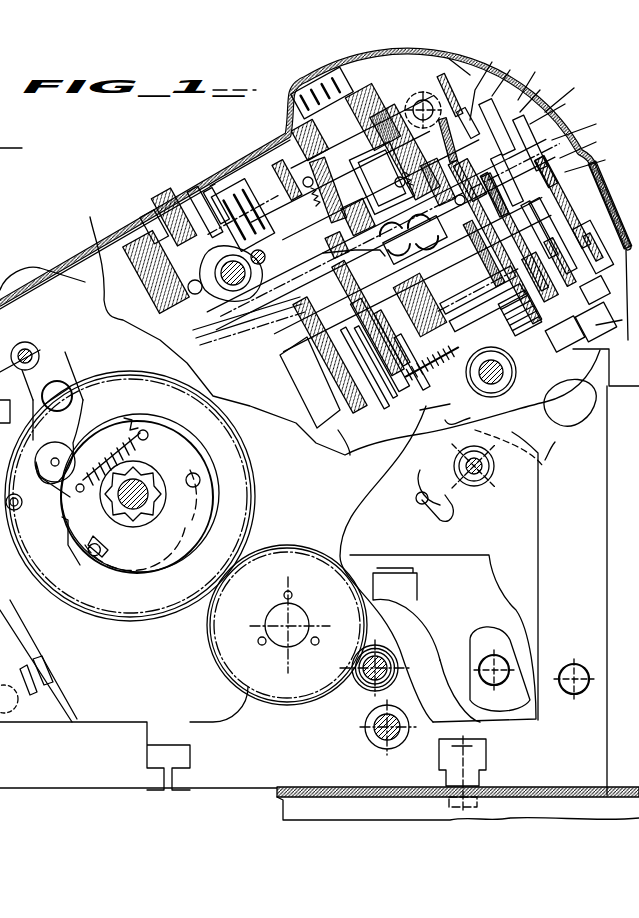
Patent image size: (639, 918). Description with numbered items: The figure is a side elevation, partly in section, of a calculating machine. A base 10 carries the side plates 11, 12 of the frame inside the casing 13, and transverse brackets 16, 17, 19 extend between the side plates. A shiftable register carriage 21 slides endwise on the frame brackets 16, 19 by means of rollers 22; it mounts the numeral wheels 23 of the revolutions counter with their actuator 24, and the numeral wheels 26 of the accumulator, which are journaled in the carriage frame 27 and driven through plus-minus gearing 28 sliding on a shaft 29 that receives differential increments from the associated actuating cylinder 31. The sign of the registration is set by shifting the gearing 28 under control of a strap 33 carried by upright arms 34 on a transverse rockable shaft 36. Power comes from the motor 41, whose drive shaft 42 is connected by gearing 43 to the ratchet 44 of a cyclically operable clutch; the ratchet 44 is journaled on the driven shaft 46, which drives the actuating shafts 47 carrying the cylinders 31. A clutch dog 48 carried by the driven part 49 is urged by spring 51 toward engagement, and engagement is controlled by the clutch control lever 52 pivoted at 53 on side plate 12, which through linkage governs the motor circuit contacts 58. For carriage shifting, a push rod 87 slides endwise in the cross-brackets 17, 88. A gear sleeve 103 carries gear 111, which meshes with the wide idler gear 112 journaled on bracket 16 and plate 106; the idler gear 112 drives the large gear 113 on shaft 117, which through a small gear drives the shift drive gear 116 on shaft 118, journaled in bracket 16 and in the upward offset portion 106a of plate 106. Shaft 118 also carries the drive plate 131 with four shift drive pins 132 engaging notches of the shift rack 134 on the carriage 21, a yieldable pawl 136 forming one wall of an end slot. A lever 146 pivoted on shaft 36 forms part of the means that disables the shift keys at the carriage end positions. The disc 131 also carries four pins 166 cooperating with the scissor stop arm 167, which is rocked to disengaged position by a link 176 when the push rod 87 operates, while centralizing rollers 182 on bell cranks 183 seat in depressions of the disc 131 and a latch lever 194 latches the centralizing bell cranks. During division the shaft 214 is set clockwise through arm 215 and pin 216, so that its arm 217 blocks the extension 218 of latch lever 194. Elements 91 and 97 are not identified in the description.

The base 10 is at (316, 788).
The side plate 11 is at (110, 258).
The side plate 12 is at (546, 536).
The casing 13 is at (605, 196).
The transverse bracket 16 is at (552, 340).
The transverse bracket 17 is at (376, 412).
The transverse bracket 19 is at (152, 290).
The shiftable register carriage 21 is at (262, 142).
The rollers 22 is at (150, 222).
The numeral wheels 23 is at (214, 190).
The actuator 24 is at (236, 292).
The numeral wheels 26 is at (335, 66).
The carriage frame 27 is at (380, 92).
The plus-minus gearing 28 is at (344, 250).
The shaft 29 is at (270, 298).
The actuating cylinder 31 is at (290, 345).
The strap 33 is at (413, 243).
The upright arms 34 is at (456, 368).
The transverse rockable shaft 36 is at (504, 378).
The motor 41 is at (458, 560).
The drive shaft 42 is at (366, 690).
The gearing 43 is at (258, 528).
The ratchet 44 is at (160, 478).
The driven shaft 46 is at (138, 488).
The actuating shafts 47 is at (318, 376).
The clutch dog 48 is at (150, 572).
The driven part 49 is at (122, 572).
The spring 51 is at (112, 444).
The clutch control lever 52 is at (78, 404).
The pivot 53 is at (66, 384).
The motor circuit contacts 58 is at (58, 670).
The push rod 87 is at (350, 445).
The cross-bracket 88 is at (426, 408).
The shaft 91 is at (474, 296).
The clutch 97 is at (444, 280).
The gear sleeve 103 is at (538, 296).
The plate 106 is at (583, 184).
The upward offset portion 106a is at (560, 130).
The gear 111 is at (578, 228).
The wide idler gear 112 is at (596, 292).
The large gear 113 is at (598, 159).
The shift drive gear 116 is at (460, 138).
The shaft 117 is at (500, 246).
The shaft 118 is at (559, 106).
The drive plate 131 is at (540, 75).
The shift drive pins 132 is at (512, 73).
The shift rack 134 is at (462, 55).
The yieldable pawl 136 is at (491, 80).
The lever 146 is at (436, 426).
The pins 166 is at (540, 92).
The scissor lever 167 is at (590, 142).
The link 176 is at (590, 334).
The rollers 182 is at (569, 91).
The centralizing bell crank 183 is at (586, 124).
The latch lever 194 is at (617, 322).
The shaft 214 is at (488, 480).
The arm 215 is at (446, 498).
The pin 216 is at (424, 508).
The arm 217 is at (530, 450).
The extension 218 is at (588, 420).